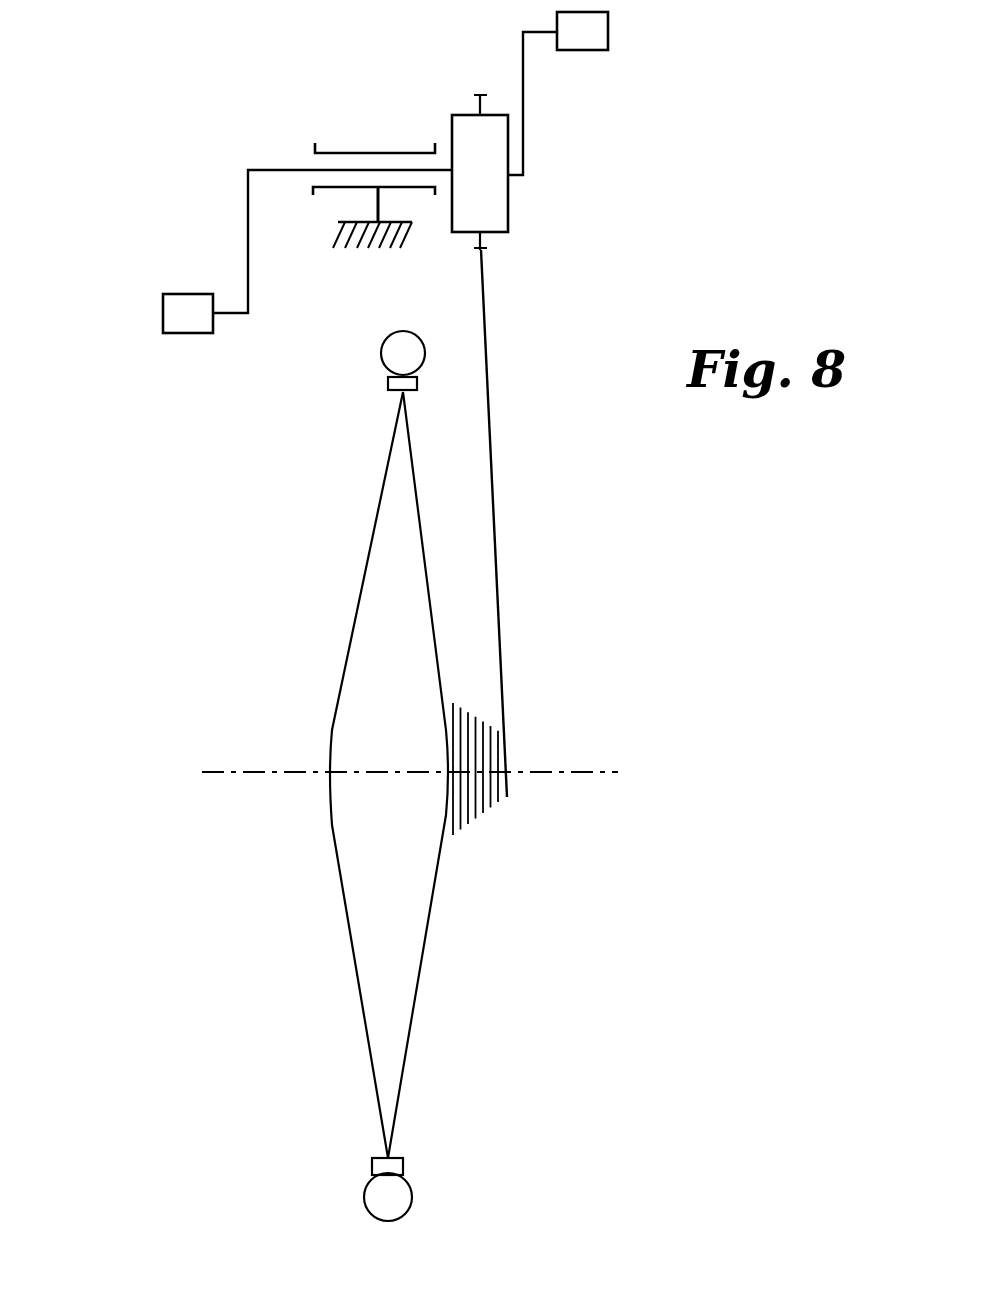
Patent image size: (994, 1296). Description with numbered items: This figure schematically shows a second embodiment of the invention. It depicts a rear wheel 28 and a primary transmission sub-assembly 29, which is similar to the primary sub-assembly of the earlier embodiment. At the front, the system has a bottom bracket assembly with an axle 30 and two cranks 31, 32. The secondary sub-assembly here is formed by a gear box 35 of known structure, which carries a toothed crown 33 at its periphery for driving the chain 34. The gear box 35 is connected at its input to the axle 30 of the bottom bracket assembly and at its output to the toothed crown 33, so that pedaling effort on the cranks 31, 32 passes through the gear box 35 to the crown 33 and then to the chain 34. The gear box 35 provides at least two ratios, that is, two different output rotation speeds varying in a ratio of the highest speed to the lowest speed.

The rear wheel 28 is at (398, 1100).
The primary transmission sub-assembly 29 is at (478, 815).
The axle 30 is at (510, 180).
The crank 31 is at (523, 100).
The crank 32 is at (248, 240).
The toothed crown 33 is at (485, 243).
The chain 34 is at (497, 548).
The gear box 35 is at (487, 197).